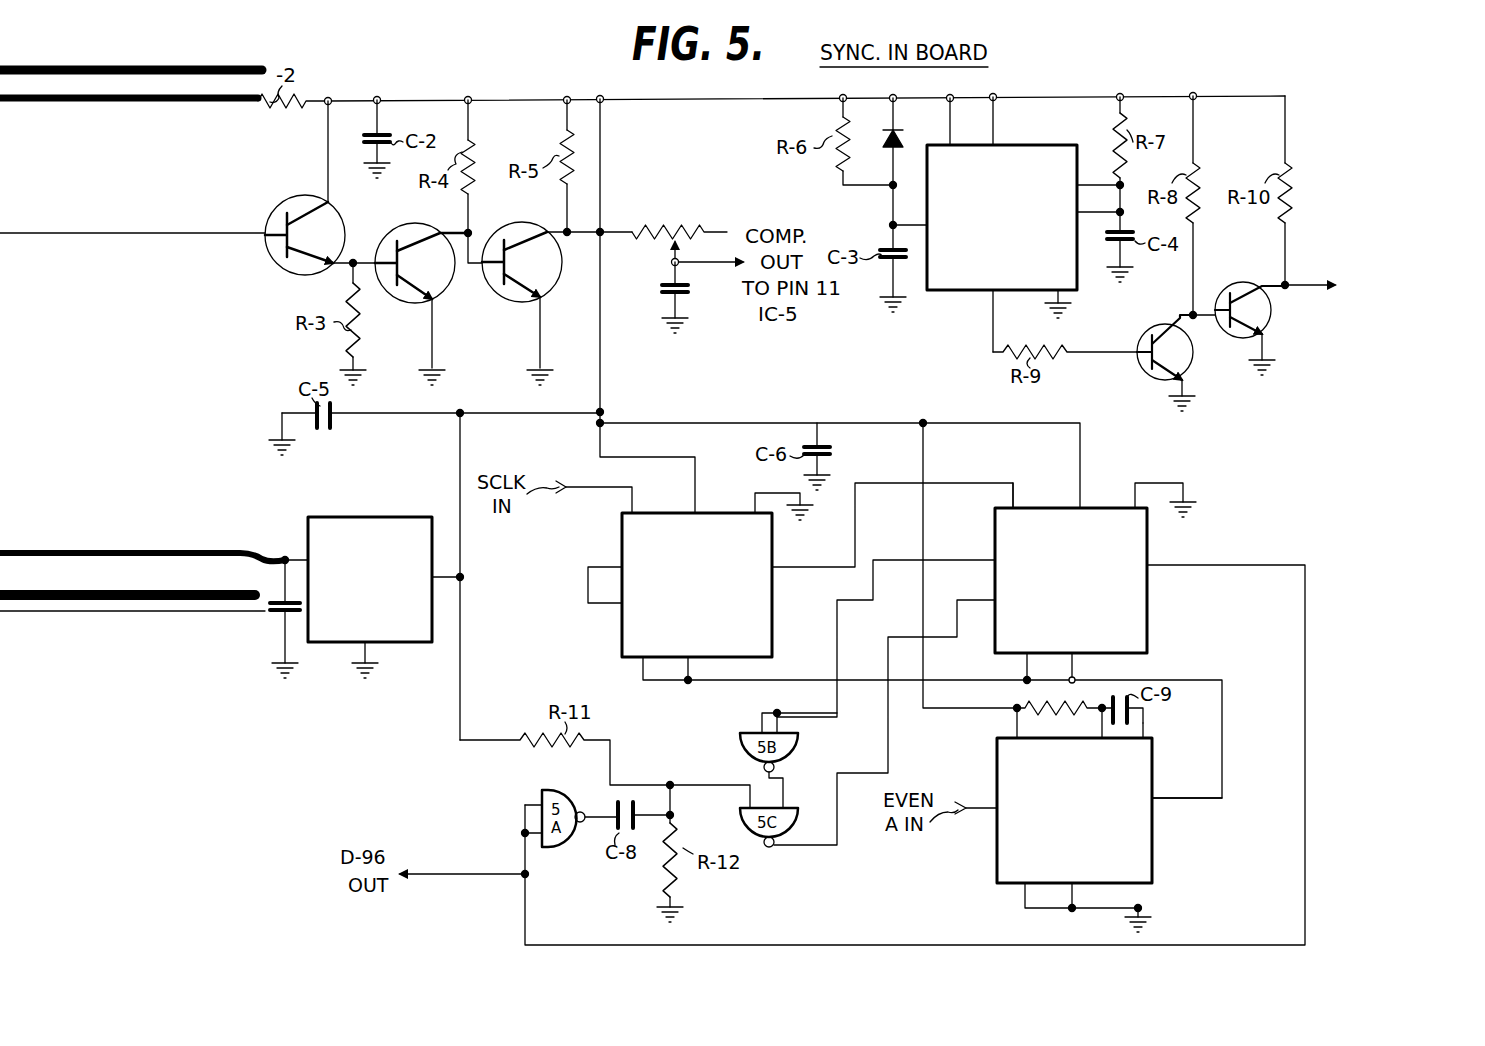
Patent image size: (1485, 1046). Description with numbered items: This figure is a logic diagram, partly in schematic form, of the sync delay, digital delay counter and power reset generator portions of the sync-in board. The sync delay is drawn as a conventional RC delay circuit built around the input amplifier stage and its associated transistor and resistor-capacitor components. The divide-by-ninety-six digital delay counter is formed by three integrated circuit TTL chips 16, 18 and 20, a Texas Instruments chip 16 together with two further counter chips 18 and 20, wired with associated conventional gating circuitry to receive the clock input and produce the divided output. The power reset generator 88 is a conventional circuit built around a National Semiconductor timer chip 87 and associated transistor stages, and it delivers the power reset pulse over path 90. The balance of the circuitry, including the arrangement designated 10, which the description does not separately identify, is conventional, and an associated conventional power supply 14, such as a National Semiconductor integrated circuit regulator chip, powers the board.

The sync in board circuit 10 is at (1203, 530).
The power supply 14 is at (333, 643).
The integrated circuit TTL chip 16 is at (1152, 830).
The integrated circuit TTL chip 18 is at (1147, 592).
The integrated circuit TTL chip 20 is at (772, 603).
The 555 chip 87 is at (965, 290).
The power reset generator 88 is at (1280, 325).
The path 90 is at (1302, 283).